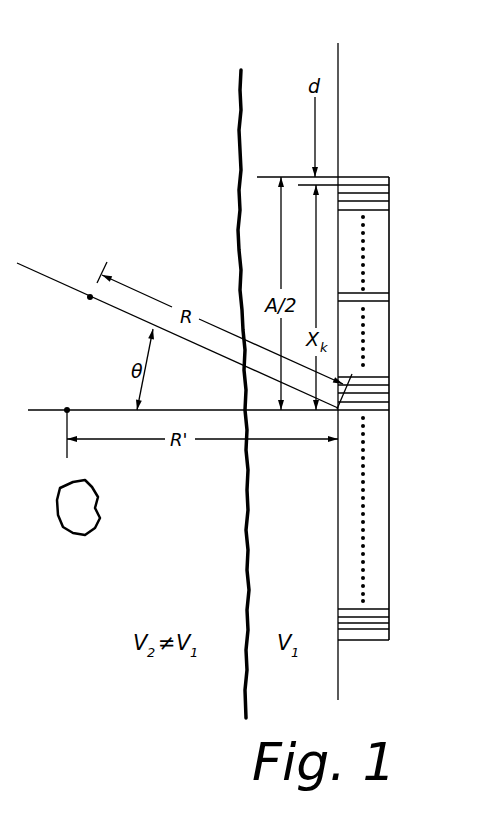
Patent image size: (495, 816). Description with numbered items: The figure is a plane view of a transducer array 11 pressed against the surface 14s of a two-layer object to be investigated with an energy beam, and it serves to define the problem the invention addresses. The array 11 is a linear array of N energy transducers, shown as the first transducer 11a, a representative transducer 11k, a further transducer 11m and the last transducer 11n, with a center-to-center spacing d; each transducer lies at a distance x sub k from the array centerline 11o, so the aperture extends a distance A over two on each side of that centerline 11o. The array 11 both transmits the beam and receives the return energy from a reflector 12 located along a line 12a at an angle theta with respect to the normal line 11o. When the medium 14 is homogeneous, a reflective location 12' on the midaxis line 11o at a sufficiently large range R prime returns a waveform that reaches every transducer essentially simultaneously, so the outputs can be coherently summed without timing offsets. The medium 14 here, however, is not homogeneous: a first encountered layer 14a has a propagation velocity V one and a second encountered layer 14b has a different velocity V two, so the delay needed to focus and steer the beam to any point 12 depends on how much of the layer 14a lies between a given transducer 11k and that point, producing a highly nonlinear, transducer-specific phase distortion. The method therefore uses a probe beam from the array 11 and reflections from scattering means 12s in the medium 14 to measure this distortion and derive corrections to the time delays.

The array 11 is at (369, 647).
The first transducer 11a is at (389, 181).
The transducer 11k is at (389, 300).
The transducer 11m is at (389, 407).
The transducer 11n is at (389, 640).
The array centerline 11o is at (215, 409).
The reflector 12 is at (58, 305).
The line 12a is at (130, 316).
The reflective location 12' is at (45, 409).
The scattering means 12s is at (97, 508).
The medium 14 is at (193, 122).
The first encountered layer 14a is at (302, 573).
The second encountered layer 14b is at (197, 573).
The surface 14s is at (338, 671).